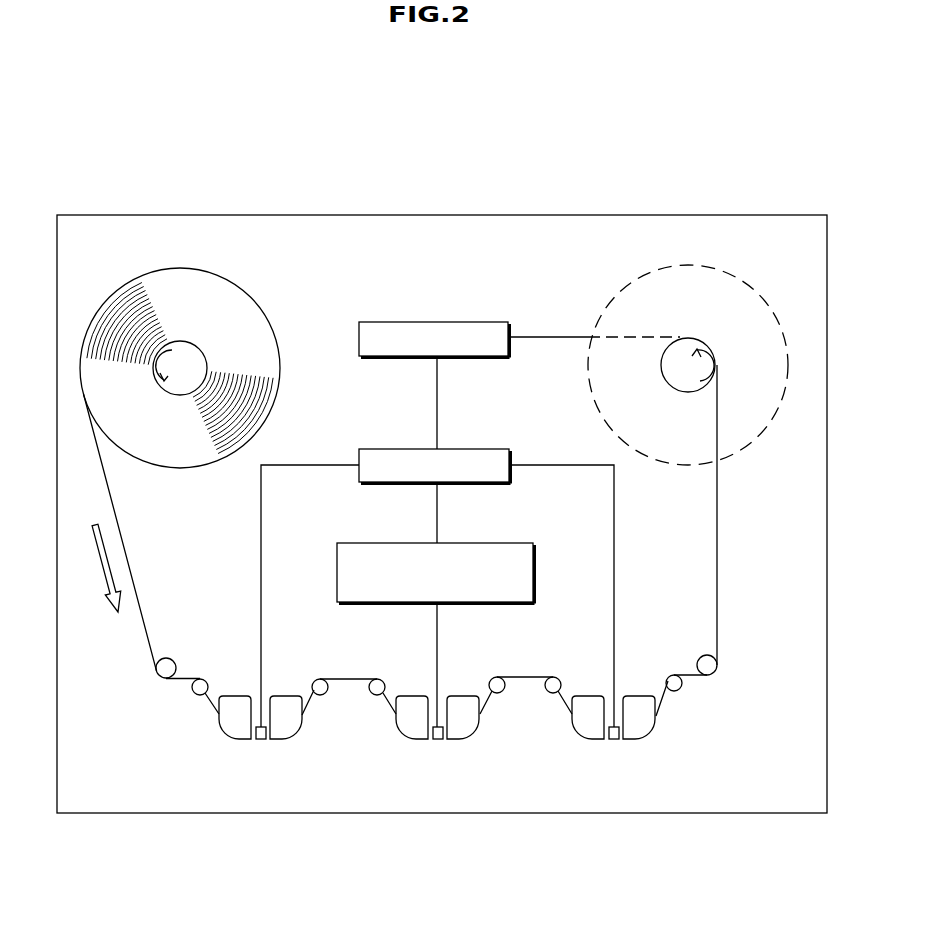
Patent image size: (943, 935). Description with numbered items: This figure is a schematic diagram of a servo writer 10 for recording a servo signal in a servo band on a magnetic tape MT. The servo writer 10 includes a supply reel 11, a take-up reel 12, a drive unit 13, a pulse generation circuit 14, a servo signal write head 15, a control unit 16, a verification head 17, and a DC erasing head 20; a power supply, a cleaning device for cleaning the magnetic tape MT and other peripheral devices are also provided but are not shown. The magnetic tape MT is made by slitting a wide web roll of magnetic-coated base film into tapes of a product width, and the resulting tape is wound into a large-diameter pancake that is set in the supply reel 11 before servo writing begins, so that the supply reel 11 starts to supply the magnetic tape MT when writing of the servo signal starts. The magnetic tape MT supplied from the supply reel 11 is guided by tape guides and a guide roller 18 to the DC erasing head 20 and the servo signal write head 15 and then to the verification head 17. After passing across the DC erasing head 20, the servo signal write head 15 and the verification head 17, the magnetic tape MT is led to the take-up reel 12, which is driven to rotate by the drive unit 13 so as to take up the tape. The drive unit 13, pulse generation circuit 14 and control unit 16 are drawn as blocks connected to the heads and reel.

The servo writer 10 is at (456, 212).
The supply reel 11 is at (181, 357).
The take-up reel 12 is at (688, 357).
The drive unit 13 is at (489, 322).
The pulse generation circuit 14 is at (490, 543).
The servo signal write head 15 is at (438, 740).
The control unit 16 is at (490, 449).
The verification head 17 is at (614, 740).
The guide roller 18 is at (162, 678).
The DC erasing head 20 is at (261, 740).
The magnetic tape MT is at (718, 537).